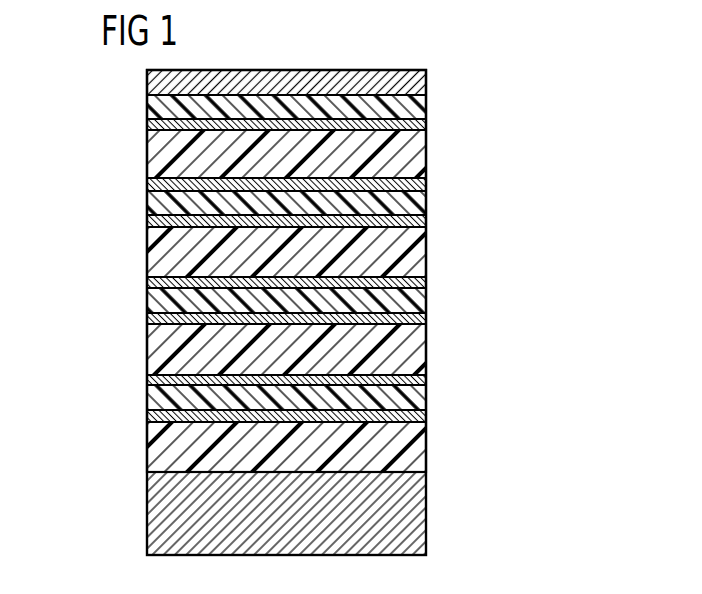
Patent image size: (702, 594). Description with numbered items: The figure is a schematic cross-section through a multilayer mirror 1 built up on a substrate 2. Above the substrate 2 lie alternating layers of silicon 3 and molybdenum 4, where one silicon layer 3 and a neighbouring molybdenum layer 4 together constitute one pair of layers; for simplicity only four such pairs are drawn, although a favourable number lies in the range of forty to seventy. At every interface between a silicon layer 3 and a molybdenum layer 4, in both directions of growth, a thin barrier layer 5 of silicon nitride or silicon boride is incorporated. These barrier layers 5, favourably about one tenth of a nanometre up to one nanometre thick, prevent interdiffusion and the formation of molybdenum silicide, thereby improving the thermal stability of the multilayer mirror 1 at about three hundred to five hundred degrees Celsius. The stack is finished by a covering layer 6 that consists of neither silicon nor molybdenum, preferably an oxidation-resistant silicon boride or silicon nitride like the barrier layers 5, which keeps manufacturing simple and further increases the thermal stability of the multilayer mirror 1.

The multilayer mirror 1 is at (485, 71).
The substrate 2 is at (424, 513).
The silicon layer 3 is at (424, 159).
The molybdenum layer 4 is at (151, 107).
The barrier layer 5 is at (424, 125).
The covering layer 6 is at (424, 82).